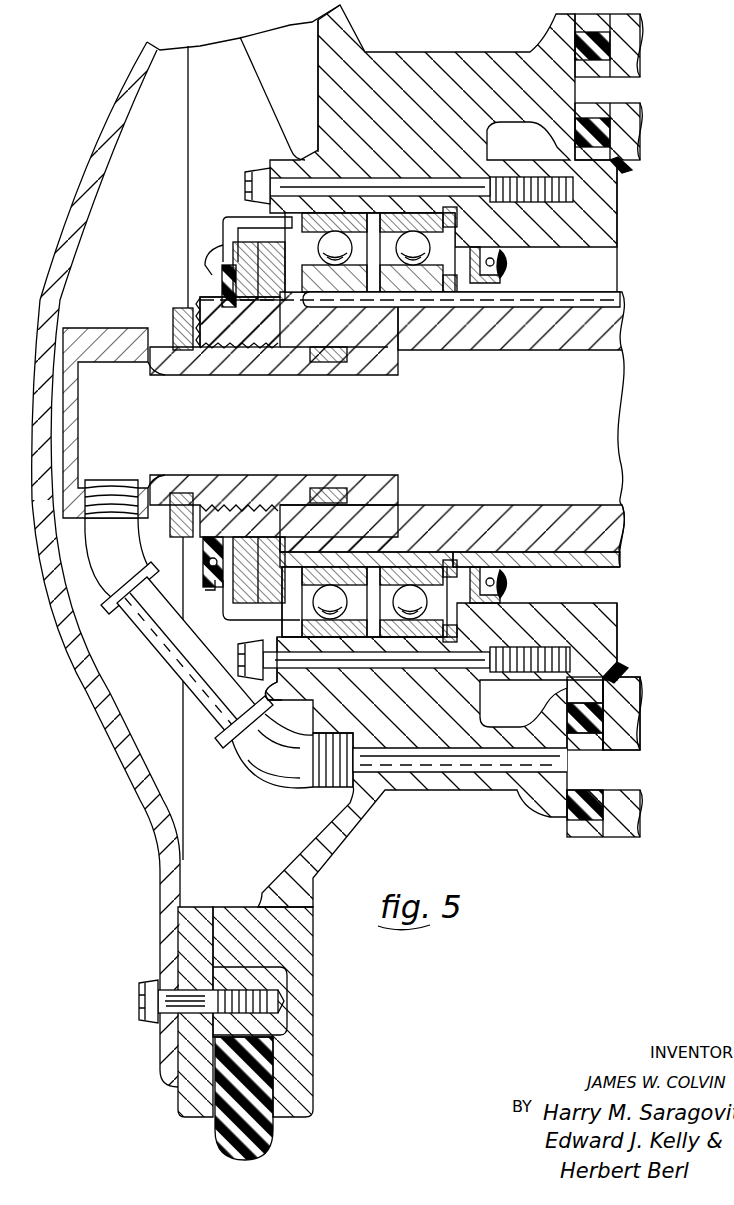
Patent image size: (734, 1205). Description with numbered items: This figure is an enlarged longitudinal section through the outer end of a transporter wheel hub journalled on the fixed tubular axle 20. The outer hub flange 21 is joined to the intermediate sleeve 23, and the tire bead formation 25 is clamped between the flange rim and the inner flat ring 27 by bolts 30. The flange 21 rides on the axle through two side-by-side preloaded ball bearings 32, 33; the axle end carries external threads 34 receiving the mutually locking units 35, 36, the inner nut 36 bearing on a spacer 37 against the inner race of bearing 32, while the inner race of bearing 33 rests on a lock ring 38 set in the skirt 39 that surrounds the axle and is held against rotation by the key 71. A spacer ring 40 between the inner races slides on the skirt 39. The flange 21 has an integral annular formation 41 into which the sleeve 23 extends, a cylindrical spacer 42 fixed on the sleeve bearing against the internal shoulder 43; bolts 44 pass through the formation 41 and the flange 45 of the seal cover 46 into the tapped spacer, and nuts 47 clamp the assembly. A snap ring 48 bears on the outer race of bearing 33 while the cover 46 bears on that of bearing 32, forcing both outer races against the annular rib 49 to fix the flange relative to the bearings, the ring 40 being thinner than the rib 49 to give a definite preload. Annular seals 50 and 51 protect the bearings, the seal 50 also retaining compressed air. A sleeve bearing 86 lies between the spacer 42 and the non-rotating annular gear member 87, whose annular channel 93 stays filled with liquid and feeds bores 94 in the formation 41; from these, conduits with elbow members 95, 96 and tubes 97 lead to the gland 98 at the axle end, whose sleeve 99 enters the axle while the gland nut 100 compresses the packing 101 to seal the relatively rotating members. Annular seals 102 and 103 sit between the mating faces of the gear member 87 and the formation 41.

The fixed tubular axle 20 is at (530, 350).
The annular flange 21 is at (338, 98).
The intermediate sleeve 23 is at (622, 620).
The bead formation 25 is at (215, 1145).
The inner flat ring 27 is at (286, 1115).
The bolt 30 is at (145, 1022).
The antifriction ball bearing 32 is at (356, 551).
The antifriction ball bearing 33 is at (420, 552).
The external threads 34 is at (255, 542).
The locking unit 35 is at (218, 600).
The locking unit 36 is at (256, 600).
The spacer 37 is at (300, 556).
The lock ring 38 is at (447, 570).
The skirt 39 is at (606, 568).
The spacer ring 40 is at (399, 350).
The annular formation 41 is at (490, 790).
The cylindrical spacer 42 is at (628, 668).
The internal annular shoulder 43 is at (468, 712).
The bolt 44 is at (425, 668).
The annular flange 45 is at (280, 696).
The annular seal cover 46 is at (252, 640).
The nut 47 is at (258, 665).
The snap ring 48 is at (433, 636).
The annular rib 49 is at (372, 636).
The annular seal 50 is at (503, 575).
The annular seal 51 is at (204, 556).
The spline or key 71 is at (610, 300).
The sleeve bearing 86 is at (625, 168).
The annular gear member 87 is at (640, 728).
The annular channel 93 is at (640, 90).
The bore 94 is at (420, 773).
The elbow member 95 is at (303, 787).
The elbow member 96 is at (106, 600).
The tube 97 is at (178, 678).
The gland 98 is at (107, 328).
The sleeve 99 is at (280, 377).
The gland nut 100 is at (173, 306).
The packing 101 is at (330, 363).
The annular seal 102 is at (610, 715).
The annular seal 103 is at (590, 822).